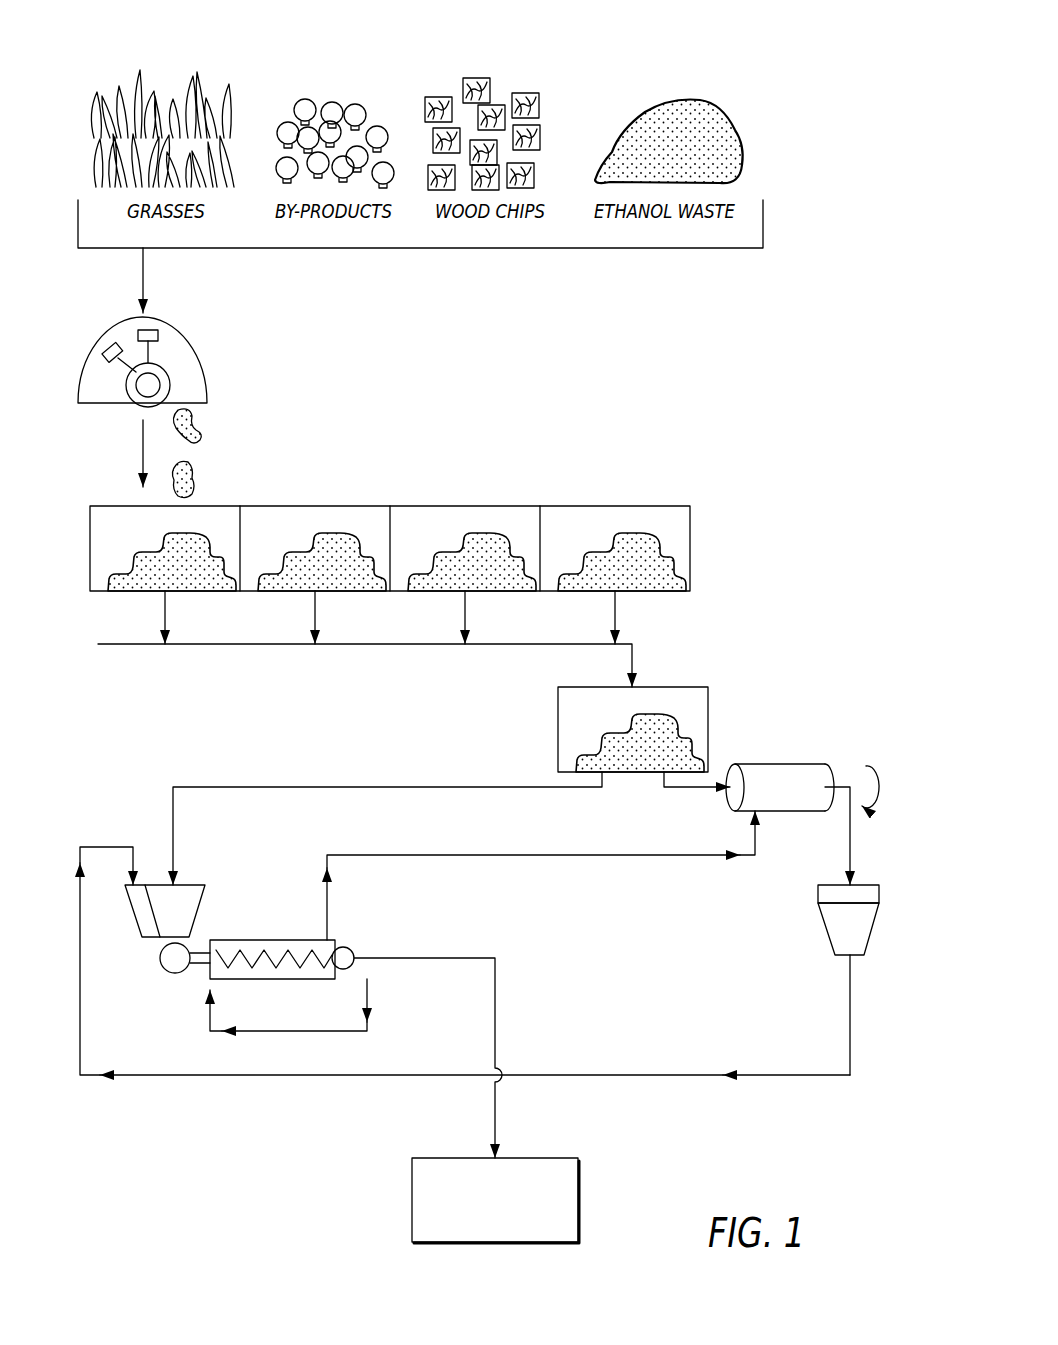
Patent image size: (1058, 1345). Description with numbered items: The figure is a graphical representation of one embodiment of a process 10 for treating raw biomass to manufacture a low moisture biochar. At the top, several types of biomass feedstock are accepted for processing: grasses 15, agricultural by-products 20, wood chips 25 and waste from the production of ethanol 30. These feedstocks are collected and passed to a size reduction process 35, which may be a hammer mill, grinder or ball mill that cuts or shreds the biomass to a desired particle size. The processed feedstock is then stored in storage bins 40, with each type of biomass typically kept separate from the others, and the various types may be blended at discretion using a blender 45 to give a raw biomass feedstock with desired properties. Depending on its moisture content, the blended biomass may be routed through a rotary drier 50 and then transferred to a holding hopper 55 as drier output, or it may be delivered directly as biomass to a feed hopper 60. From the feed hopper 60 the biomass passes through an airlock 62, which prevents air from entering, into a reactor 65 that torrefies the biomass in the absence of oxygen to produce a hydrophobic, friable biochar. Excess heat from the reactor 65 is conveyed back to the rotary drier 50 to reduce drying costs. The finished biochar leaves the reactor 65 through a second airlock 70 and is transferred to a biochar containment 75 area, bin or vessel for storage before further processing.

The process 10 is at (735, 358).
The grasses 15 is at (153, 92).
The agricultural by-products 20 is at (328, 100).
The wood chips 25 is at (440, 97).
The waste from the production of ethanol 30 is at (652, 103).
The size reduction process 35 is at (207, 383).
The storage bins 40 is at (690, 520).
The blender 45 is at (708, 703).
The rotary drier 50 is at (735, 800).
The holding hopper 55 is at (826, 929).
The feed hopper 60 is at (193, 885).
The airlock 62 is at (163, 962).
The reactor 65 is at (210, 972).
The airlock 70 is at (350, 948).
The biochar containment 75 is at (412, 1198).